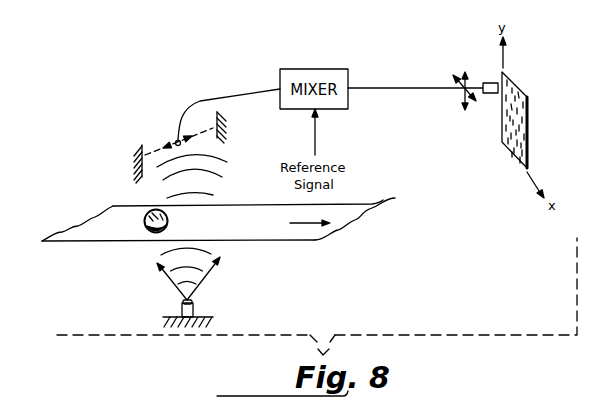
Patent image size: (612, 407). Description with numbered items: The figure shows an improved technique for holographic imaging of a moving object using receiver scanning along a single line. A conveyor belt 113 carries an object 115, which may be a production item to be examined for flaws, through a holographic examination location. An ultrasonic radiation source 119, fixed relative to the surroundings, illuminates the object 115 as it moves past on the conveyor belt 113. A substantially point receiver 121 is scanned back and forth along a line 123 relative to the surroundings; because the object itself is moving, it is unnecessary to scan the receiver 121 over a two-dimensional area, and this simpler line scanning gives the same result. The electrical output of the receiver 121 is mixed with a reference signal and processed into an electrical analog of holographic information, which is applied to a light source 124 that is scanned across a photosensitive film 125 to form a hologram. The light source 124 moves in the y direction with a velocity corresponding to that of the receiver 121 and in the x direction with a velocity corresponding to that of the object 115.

The conveyor belt 113 is at (395, 198).
The object 115 is at (147, 212).
The ultrasonic radiation source 119 is at (193, 307).
The point receiver 121 is at (175, 141).
The line 123 is at (202, 137).
The light source 124 is at (489, 83).
The photosensitive film 125 is at (512, 85).